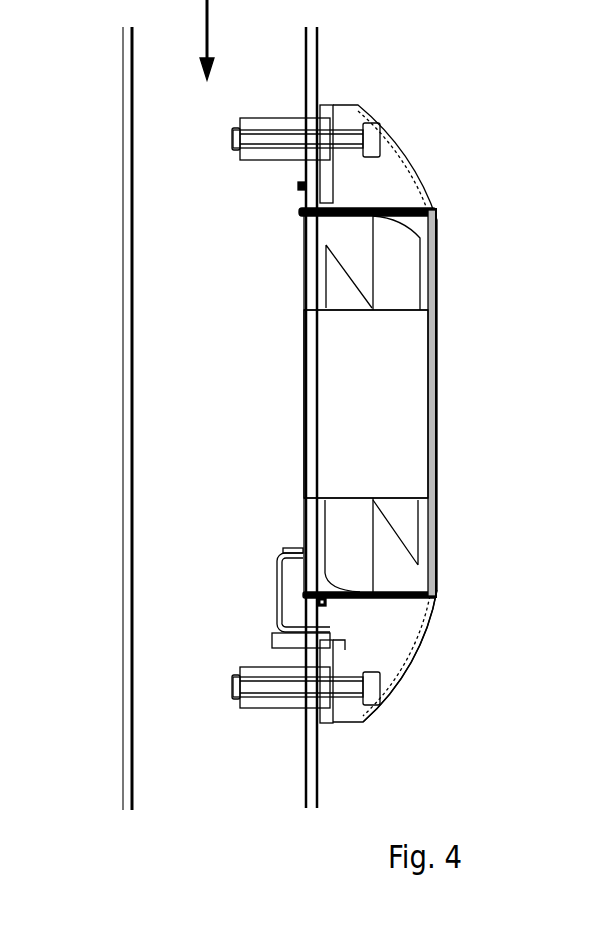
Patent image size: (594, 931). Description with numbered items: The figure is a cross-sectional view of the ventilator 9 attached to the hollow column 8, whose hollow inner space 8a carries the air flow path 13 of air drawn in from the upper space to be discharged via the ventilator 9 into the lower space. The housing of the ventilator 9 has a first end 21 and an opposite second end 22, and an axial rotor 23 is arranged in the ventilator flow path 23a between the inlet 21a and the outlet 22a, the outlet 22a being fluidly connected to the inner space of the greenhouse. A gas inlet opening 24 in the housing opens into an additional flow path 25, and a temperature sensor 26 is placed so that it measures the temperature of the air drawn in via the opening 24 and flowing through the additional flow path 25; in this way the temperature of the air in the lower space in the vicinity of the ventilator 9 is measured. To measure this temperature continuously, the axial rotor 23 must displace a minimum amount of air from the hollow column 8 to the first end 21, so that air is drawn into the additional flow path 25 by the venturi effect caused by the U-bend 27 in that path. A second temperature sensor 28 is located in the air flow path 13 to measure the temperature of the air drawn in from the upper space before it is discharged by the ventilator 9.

The hollow column 8 is at (131, 113).
The hollow inner space 8a is at (163, 83).
The ventilator 9 is at (405, 190).
The air flow path 13 is at (210, 50).
The first end 21 is at (438, 307).
The inlet 21a is at (438, 265).
The second end 22 is at (304, 268).
The outlet 22a is at (304, 292).
The axial rotor 23 is at (400, 378).
The ventilator flow path 23a is at (395, 568).
The gas inlet opening 24 is at (350, 650).
The additional flow path 25 is at (422, 650).
The temperature sensor 26 is at (327, 604).
The U-bend 27 is at (277, 593).
The temperature sensor 28 is at (298, 186).